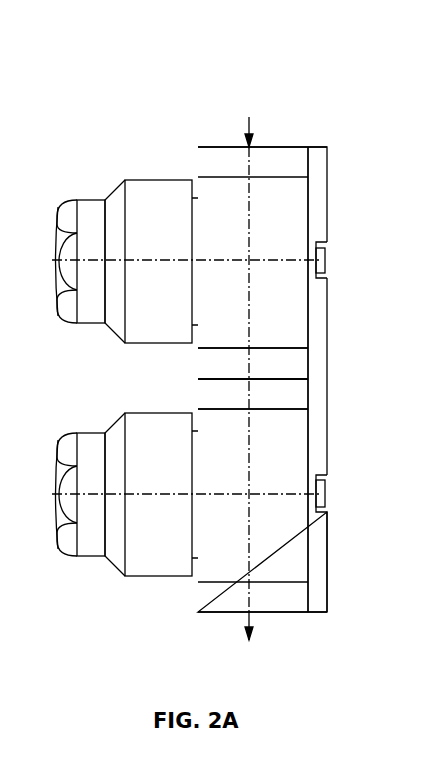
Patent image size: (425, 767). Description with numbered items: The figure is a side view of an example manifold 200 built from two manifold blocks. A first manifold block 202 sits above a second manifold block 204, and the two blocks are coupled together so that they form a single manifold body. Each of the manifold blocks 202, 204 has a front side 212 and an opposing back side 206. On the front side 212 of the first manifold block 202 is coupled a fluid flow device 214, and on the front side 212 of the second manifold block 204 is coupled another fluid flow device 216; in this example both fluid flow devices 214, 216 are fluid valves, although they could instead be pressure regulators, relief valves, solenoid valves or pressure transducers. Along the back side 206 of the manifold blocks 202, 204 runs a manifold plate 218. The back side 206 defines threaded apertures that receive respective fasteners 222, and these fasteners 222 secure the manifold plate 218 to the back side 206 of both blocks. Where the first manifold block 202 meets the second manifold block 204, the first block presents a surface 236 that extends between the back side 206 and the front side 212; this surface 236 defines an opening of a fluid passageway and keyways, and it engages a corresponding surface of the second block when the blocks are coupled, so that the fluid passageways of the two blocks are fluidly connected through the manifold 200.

The manifold 200 is at (108, 66).
The manifold block 202 is at (222, 146).
The manifold block 204 is at (221, 603).
The back side 206 is at (308, 365).
The front side 212 is at (197, 358).
The fluid flow device 214 is at (135, 180).
The fluid flow device 216 is at (147, 413).
The manifold plate 218 is at (315, 603).
The fasteners 222 is at (322, 255).
The surface 236 is at (273, 380).